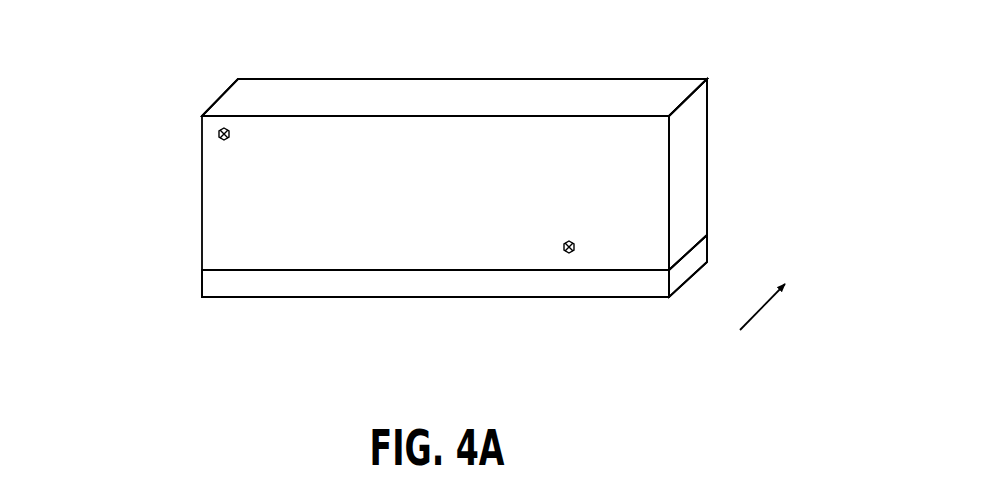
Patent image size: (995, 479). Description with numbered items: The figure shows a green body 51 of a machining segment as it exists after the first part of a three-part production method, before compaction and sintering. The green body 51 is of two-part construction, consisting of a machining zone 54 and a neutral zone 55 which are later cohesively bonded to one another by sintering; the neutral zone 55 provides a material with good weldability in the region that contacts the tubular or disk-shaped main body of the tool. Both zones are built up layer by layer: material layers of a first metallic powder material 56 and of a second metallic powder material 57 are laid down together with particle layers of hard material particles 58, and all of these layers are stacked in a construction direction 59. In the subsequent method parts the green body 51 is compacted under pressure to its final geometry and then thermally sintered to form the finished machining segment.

The green body 51 is at (140, 186).
The machining zone 54 is at (753, 138).
The neutral zone 55 is at (753, 235).
The first metallic powder material 56 is at (644, 98).
The second metallic powder material 57 is at (245, 285).
The hard material particles 58 is at (224, 127).
The construction direction 59 is at (774, 310).